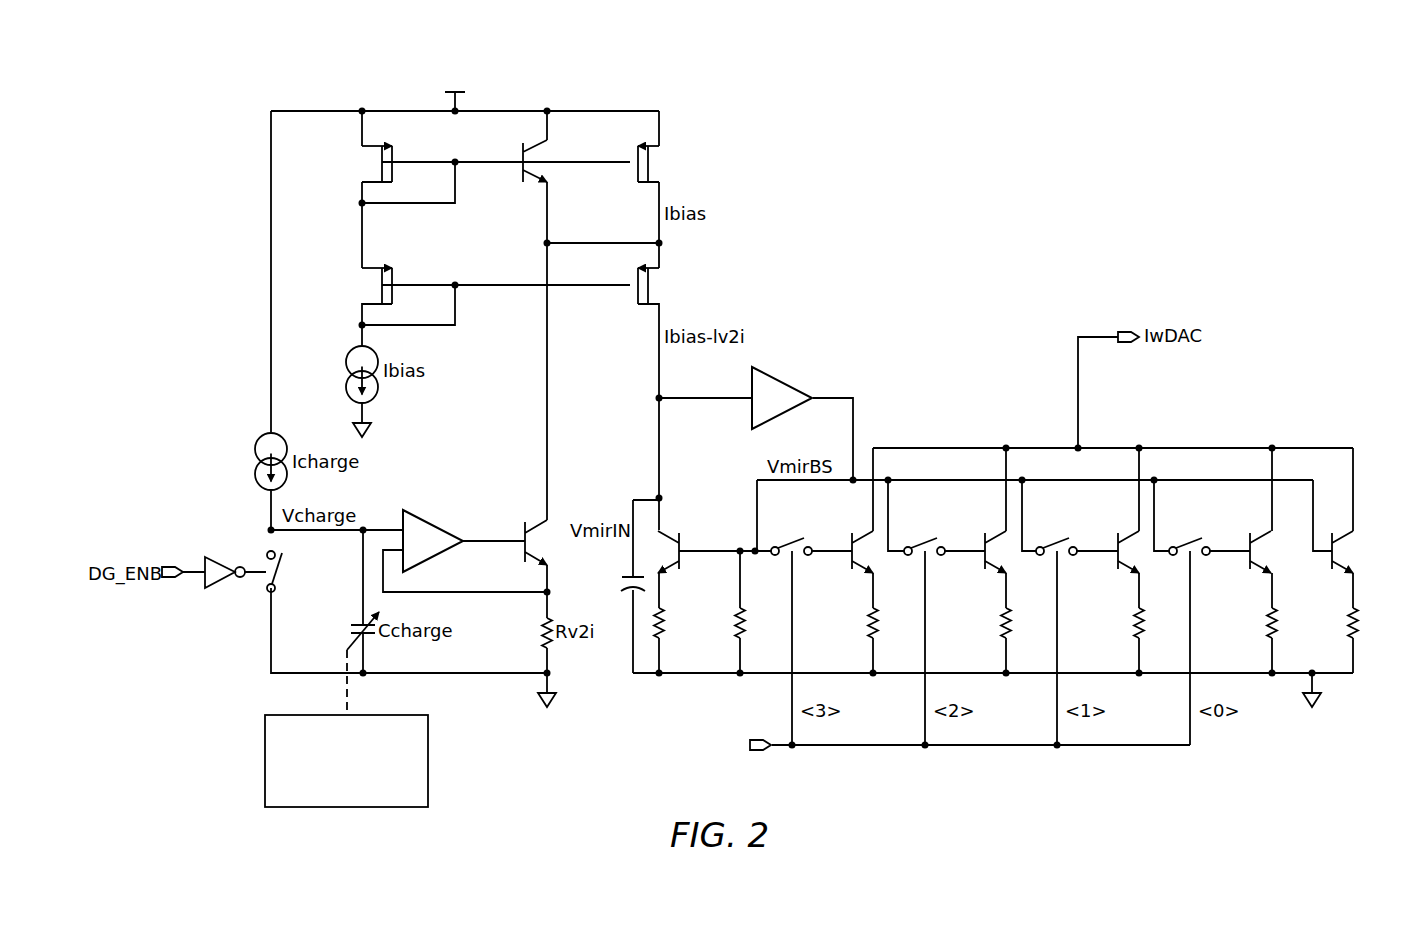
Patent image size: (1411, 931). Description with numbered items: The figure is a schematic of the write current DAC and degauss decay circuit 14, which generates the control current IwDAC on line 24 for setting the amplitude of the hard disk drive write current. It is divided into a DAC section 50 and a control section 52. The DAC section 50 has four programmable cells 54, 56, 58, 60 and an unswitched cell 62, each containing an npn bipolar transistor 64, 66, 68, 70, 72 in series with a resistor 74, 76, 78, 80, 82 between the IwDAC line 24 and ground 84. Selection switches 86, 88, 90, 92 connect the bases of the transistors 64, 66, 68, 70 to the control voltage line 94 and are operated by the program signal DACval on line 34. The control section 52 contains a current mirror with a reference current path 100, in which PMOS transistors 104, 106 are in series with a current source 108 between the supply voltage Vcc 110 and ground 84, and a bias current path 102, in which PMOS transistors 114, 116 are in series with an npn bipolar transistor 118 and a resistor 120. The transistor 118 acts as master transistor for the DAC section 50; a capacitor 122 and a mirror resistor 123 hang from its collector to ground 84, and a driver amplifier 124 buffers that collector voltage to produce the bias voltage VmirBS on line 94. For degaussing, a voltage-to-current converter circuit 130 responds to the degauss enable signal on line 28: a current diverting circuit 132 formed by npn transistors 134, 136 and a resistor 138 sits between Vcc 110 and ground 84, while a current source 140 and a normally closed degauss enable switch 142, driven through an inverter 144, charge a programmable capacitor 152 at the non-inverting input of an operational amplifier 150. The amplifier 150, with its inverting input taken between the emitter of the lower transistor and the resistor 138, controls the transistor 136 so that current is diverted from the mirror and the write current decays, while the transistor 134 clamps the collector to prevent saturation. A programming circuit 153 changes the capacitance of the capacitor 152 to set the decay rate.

The write current DAC and degauss decay circuit 14 is at (1149, 128).
The control current line 24 is at (1097, 335).
The degauss enable signal line 28 is at (170, 580).
The program signal line 34 is at (1125, 748).
The DAC section 50 is at (1245, 290).
The control section 52 is at (747, 127).
The programmable cell 54 is at (905, 430).
The programmable cell 56 is at (1029, 430).
The programmable cell 58 is at (1160, 430).
The programmable cell 60 is at (1282, 430).
The unswitched cell 62 is at (1349, 430).
The npn bipolar transistor 64 is at (847, 560).
The npn bipolar transistor 66 is at (980, 560).
The npn bipolar transistor 68 is at (1113, 560).
The npn bipolar transistor 70 is at (1245, 560).
The npn transistor 72 is at (1327, 560).
The resistor 74 is at (866, 625).
The resistor 76 is at (999, 625).
The resistor 78 is at (1132, 625).
The resistor 80 is at (1265, 625).
The resistor 82 is at (1346, 625).
The ground 84 is at (370, 432).
The selection switch 86 is at (803, 538).
The selection switch 88 is at (936, 538).
The selection switch 90 is at (1068, 538).
The selection switch 92 is at (1201, 538).
The control voltage line 94 is at (834, 398).
The reference current path 100 is at (347, 316).
The bias current path 102 is at (682, 242).
The PMOS transistor 104 is at (392, 153).
The PMOS transistor 106 is at (392, 276).
The current source 108 is at (346, 388).
The supply voltage Vcc 110 is at (453, 92).
The PMOS transistor 114 is at (630, 153).
The PMOS transistor 116 is at (630, 296).
The npn bipolar transistor 118 is at (682, 545).
The resistor 120 is at (667, 625).
The capacitor 122 is at (624, 580).
The mirror resistor 123 is at (735, 622).
The driver amplifier 124 is at (780, 380).
The voltage-to-current converter circuit 130 is at (222, 527).
The current diverting circuit 132 is at (527, 340).
The npn transistor 134 is at (523, 170).
The npn transistor 136 is at (523, 550).
The resistor 138 is at (541, 638).
The current source 140 is at (255, 448).
The degauss enable switch 142 is at (285, 567).
The inverter 144 is at (222, 589).
The operational amplifier 150 is at (436, 518).
The programmable capacitor 152 is at (349, 630).
The programming circuit 153 is at (265, 760).